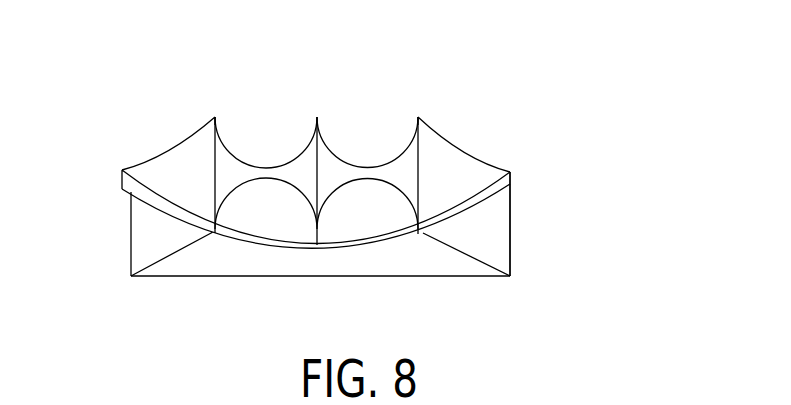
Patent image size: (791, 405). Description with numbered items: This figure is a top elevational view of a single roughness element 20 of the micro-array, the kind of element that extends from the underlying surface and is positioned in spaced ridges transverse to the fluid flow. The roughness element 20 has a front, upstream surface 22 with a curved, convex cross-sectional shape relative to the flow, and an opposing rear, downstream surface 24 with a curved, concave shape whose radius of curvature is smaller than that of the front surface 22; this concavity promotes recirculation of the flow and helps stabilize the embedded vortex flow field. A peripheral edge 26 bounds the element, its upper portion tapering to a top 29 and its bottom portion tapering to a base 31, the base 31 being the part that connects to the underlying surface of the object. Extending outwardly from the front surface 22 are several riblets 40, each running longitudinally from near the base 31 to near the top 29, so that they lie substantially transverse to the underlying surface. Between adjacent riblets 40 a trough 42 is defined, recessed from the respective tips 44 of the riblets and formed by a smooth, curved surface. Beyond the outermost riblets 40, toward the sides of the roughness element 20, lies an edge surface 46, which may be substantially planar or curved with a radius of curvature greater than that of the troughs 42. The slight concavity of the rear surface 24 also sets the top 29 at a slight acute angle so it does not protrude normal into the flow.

The roughness element 20 is at (574, 98).
The front, upstream surface 22 is at (133, 160).
The rear, downstream surface 24 is at (234, 257).
The peripheral edge 26 is at (518, 176).
The top 29 is at (312, 266).
The base 31 is at (493, 250).
The riblet 40 is at (217, 115).
The trough 42 is at (266, 166).
The tip 44 is at (322, 112).
The edge surface 46 is at (173, 156).